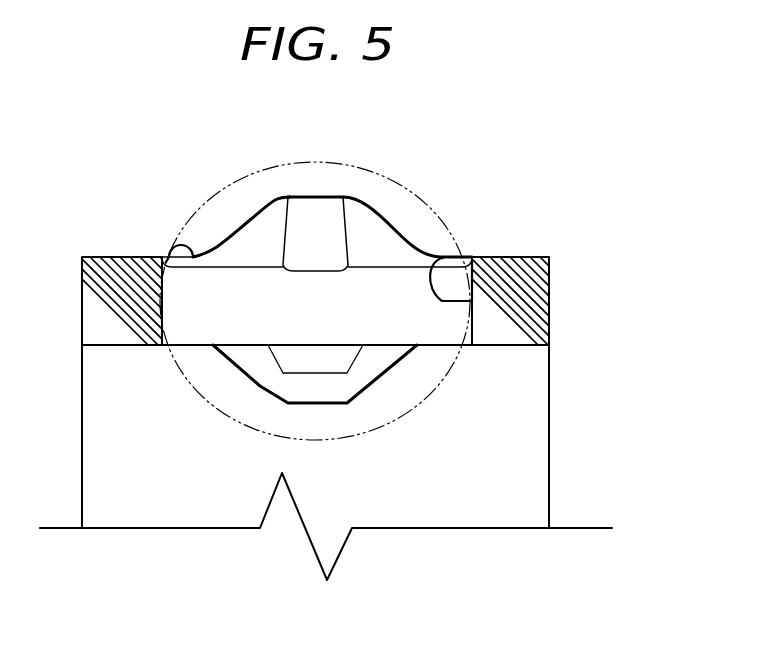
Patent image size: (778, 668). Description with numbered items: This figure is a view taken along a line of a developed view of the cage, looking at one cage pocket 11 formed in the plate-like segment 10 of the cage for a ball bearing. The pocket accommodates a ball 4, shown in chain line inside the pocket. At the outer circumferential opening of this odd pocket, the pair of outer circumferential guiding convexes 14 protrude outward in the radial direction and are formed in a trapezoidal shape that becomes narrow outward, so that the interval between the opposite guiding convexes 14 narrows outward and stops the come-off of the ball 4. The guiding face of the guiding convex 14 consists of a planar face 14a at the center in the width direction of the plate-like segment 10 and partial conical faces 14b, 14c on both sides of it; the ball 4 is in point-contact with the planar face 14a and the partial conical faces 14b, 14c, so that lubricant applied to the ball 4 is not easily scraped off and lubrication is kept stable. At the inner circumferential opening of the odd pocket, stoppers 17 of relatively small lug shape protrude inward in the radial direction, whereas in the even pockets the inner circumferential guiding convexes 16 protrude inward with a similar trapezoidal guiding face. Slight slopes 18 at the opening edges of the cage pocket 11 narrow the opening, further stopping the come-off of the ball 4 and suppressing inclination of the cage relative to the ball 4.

The ball 4 is at (360, 161).
The plate-like segment 10 is at (558, 389).
The cage pocket 11 is at (438, 256).
The outer circumferential guiding convex 14 is at (333, 183).
The planar face 14a is at (332, 227).
The partial conical face 14b is at (267, 228).
The partial conical face 14c is at (368, 242).
The inner circumferential guiding convex 16 is at (260, 391).
The stopper 17 is at (325, 363).
The slight slope 18 is at (176, 240).